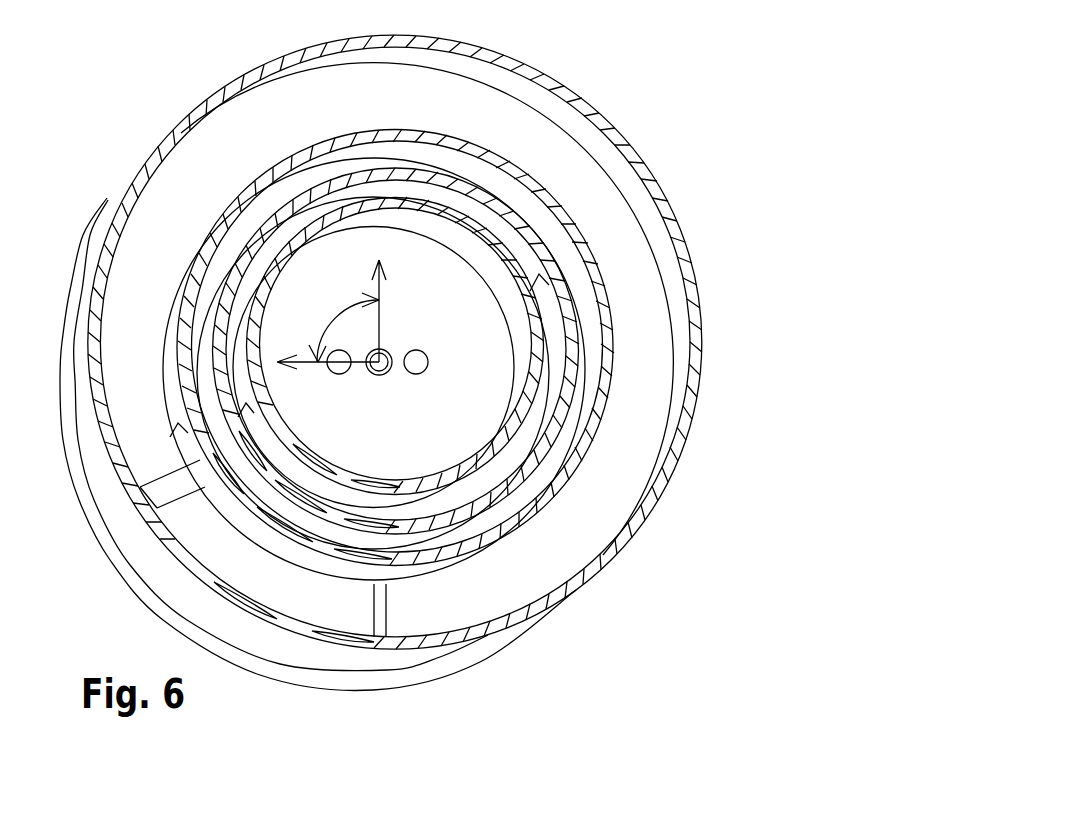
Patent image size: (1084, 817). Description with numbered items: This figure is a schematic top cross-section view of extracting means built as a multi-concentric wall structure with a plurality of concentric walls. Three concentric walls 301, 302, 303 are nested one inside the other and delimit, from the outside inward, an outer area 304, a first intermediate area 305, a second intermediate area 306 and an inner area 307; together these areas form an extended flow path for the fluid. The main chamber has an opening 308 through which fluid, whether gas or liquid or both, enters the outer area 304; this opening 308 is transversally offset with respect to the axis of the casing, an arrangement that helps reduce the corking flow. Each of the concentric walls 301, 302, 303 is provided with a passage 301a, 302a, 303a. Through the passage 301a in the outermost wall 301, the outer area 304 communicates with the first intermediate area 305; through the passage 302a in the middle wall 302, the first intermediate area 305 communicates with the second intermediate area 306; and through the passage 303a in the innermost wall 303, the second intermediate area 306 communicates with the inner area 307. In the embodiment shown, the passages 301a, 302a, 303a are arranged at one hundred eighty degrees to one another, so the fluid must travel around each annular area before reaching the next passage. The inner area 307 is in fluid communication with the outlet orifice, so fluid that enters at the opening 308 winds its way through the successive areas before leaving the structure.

The concentric wall 301 is at (545, 176).
The concentric wall 302 is at (224, 262).
The concentric wall 303 is at (292, 240).
The outer area 304 is at (483, 604).
The first intermediate area 305 is at (494, 541).
The second intermediate area 306 is at (497, 491).
The inner area 307 is at (466, 436).
The opening 308 is at (255, 590).
The passage 301a is at (548, 279).
The passage 302a is at (266, 403).
The passage 303a is at (194, 444).